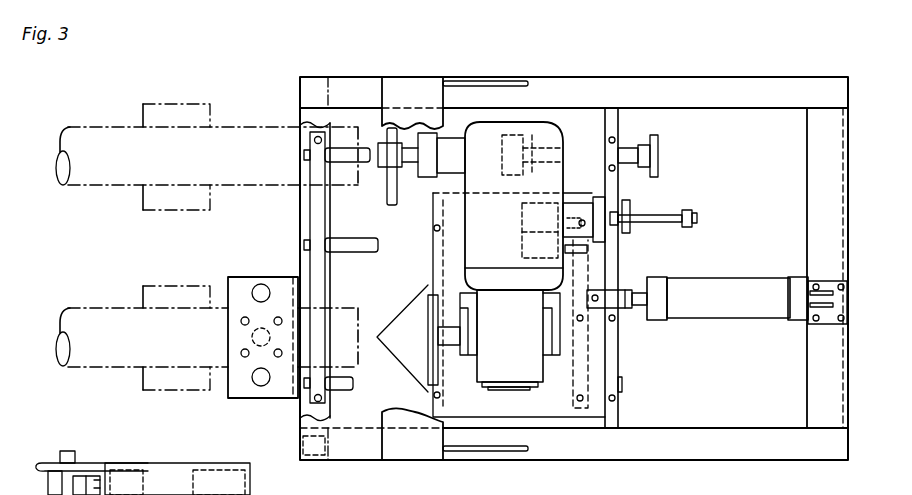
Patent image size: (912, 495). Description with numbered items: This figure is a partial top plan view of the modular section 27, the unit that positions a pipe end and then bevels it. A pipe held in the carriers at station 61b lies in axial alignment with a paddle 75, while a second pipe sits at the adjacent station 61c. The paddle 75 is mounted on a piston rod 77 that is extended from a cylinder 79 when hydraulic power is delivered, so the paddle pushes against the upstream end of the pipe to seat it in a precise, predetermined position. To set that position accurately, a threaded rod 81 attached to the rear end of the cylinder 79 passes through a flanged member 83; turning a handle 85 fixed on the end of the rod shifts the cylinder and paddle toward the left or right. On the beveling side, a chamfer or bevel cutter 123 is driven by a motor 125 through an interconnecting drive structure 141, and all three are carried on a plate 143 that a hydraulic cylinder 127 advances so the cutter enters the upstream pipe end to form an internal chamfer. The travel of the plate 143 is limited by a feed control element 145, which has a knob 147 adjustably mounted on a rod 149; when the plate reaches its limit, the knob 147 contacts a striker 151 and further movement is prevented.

The modular section 27 is at (692, 410).
The station 61b is at (168, 100).
The station 61c is at (152, 285).
The paddle 75 is at (388, 198).
The piston rod 77 is at (408, 152).
The cylinder 79 is at (452, 147).
The threaded rod 81 is at (628, 148).
The flanged member 83 is at (622, 148).
The handle 85 is at (660, 165).
The bevel cutter 123 is at (407, 315).
The motor 125 is at (487, 212).
The hydraulic cylinder 127 is at (743, 307).
The interconnecting drive structure 141 is at (492, 350).
The plate 143 is at (593, 370).
The feed control element 145 is at (573, 207).
The knob 147 is at (690, 228).
The rod 149 is at (655, 222).
The striker 151 is at (630, 205).